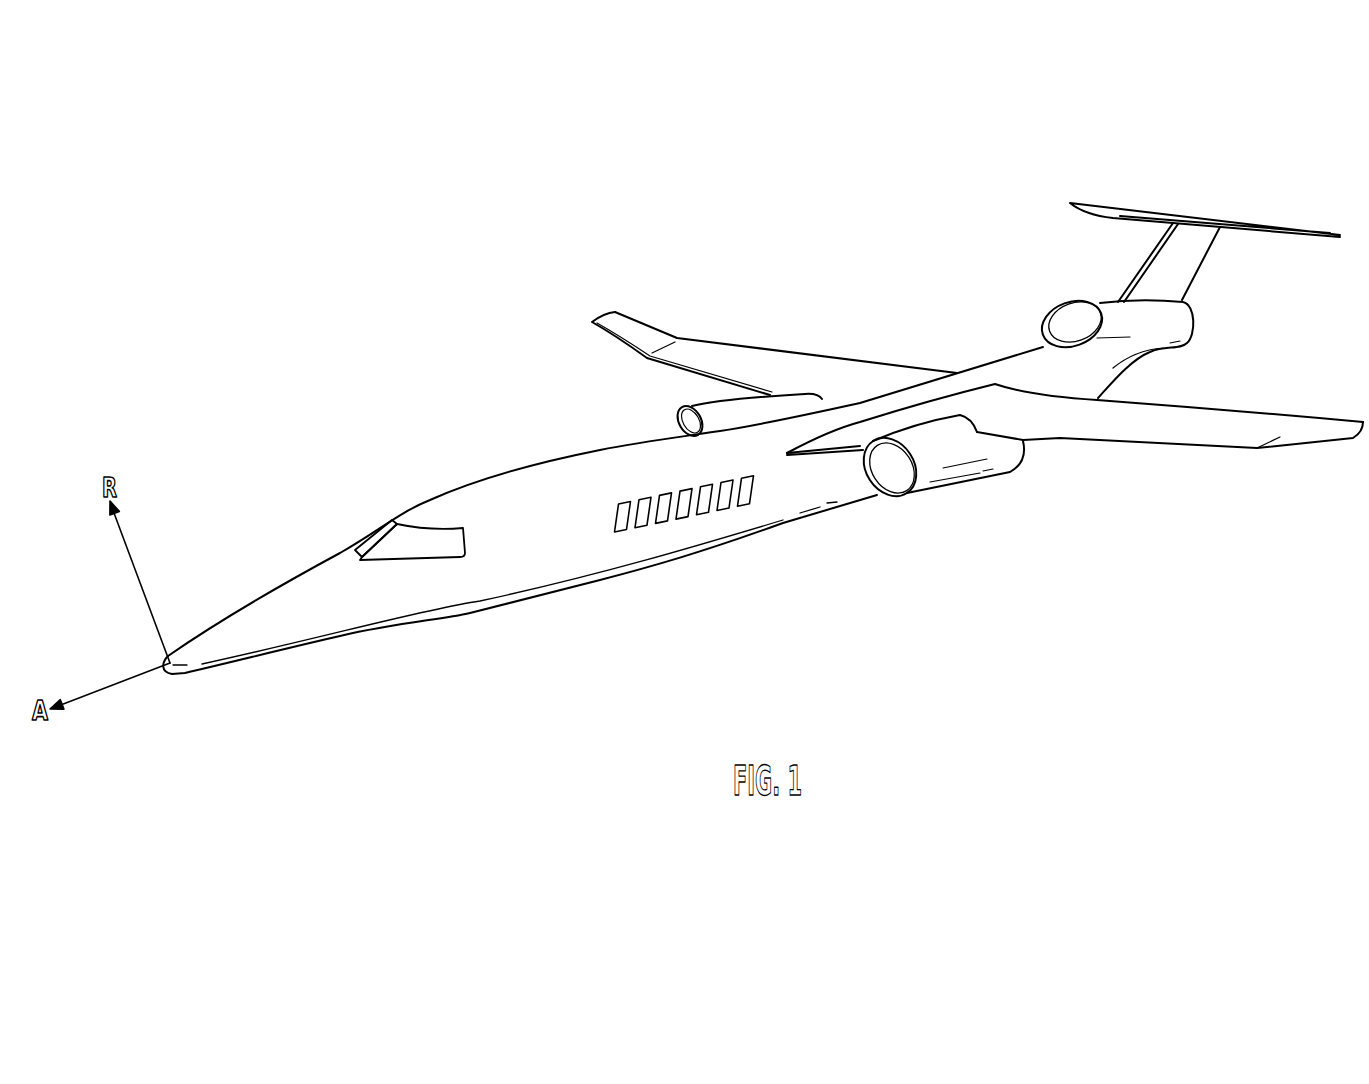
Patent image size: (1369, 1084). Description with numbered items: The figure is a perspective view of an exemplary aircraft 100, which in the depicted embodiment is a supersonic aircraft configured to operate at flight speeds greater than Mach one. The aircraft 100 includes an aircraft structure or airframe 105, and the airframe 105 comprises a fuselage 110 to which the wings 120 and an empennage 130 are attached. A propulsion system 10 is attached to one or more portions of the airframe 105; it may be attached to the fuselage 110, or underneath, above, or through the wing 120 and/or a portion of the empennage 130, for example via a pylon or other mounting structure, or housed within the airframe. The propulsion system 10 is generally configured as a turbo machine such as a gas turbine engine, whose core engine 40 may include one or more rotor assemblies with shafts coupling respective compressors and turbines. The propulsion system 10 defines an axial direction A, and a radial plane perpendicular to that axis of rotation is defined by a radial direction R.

The aircraft 100 is at (385, 349).
The airframe 105 is at (594, 417).
The fuselage 110 is at (547, 560).
The core engine 40 is at (663, 567).
The wings 120 is at (762, 362).
The propulsion system 10 is at (712, 407).
The empennage 130 is at (1219, 266).